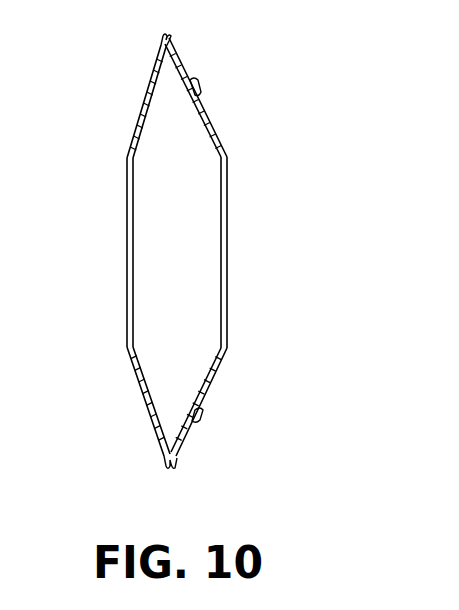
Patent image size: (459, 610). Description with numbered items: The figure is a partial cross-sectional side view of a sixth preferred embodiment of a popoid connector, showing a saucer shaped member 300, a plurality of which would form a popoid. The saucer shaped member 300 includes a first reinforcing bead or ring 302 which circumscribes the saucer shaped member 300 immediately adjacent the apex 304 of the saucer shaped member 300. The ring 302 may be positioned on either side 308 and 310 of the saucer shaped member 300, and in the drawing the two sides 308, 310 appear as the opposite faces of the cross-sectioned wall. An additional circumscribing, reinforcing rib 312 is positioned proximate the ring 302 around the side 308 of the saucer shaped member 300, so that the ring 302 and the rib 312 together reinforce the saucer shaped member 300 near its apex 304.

The saucer shaped member 300 is at (219, 254).
The first reinforcing bead or ring 302 is at (172, 40).
The apex 304 is at (162, 455).
The side 308 is at (189, 70).
The side 310 is at (136, 118).
The circumscribing reinforcing rib 312 is at (194, 419).